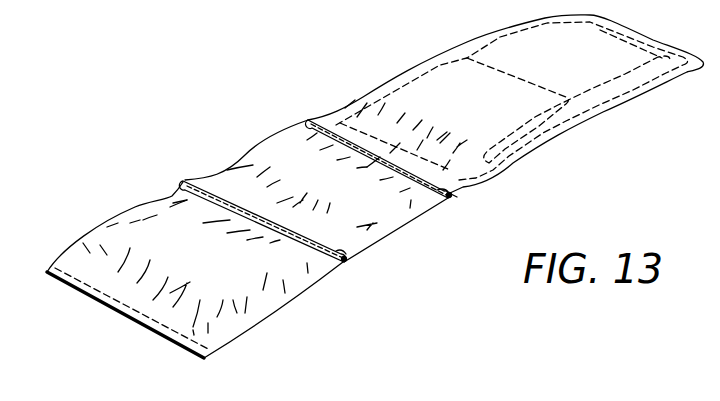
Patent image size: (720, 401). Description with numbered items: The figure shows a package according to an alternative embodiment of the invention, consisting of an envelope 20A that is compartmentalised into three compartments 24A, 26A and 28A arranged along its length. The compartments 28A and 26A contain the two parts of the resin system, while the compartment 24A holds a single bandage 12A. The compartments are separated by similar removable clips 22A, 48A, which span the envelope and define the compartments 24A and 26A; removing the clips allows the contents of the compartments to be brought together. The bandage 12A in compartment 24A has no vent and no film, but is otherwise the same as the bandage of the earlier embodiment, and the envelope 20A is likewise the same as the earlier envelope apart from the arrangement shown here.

The bandage 12A is at (395, 85).
The envelope 20A is at (420, 214).
The removable clip 22A is at (226, 189).
The compartment 24A is at (560, 142).
The compartment 26A is at (400, 228).
The compartment 28A is at (155, 227).
The removable clip 48A is at (470, 190).